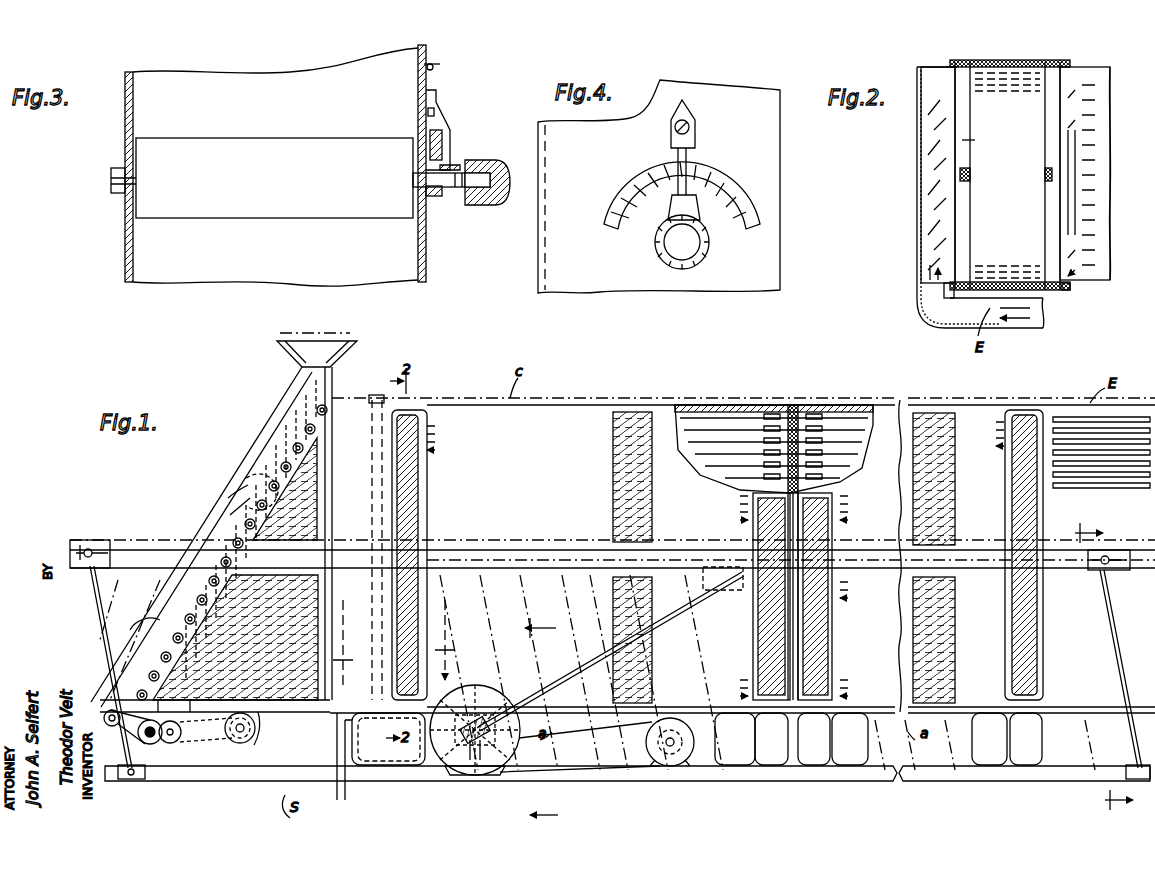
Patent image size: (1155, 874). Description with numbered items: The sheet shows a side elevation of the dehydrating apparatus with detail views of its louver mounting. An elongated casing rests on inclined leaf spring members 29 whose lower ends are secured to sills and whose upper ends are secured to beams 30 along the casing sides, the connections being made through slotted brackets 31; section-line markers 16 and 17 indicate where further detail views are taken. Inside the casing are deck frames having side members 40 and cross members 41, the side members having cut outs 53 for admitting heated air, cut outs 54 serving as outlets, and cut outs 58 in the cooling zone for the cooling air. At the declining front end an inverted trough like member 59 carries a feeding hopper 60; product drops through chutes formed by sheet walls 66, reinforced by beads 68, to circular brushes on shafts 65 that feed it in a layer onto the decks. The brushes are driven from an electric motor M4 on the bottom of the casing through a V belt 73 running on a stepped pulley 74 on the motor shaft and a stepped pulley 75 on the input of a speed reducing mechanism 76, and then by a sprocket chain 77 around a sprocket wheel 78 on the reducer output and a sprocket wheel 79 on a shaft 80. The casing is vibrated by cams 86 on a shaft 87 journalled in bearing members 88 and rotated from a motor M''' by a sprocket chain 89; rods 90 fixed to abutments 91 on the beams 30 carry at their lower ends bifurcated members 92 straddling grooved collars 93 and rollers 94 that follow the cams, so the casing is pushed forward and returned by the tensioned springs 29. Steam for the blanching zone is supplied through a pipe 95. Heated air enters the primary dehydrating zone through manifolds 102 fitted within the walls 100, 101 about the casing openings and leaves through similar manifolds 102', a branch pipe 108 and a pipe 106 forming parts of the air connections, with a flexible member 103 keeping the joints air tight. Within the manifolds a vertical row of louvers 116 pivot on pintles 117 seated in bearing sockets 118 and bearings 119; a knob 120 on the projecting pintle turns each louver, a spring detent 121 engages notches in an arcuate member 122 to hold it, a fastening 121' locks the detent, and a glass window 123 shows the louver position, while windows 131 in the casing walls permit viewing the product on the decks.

In FIG. 1, the air flow arrow 16 is at (399, 648).
In FIG. 1, the direction arrow 17 is at (1115, 666).
In FIG. 1, the leaf spring members 29 is at (128, 582).
In FIG. 2, the beams 30 is at (960, 172).
In FIG. 1, the beams 30 is at (140, 548).
In FIG. 1, the brackets 31 is at (90, 540).
In FIG. 1, the side members 40 is at (715, 440).
In FIG. 1, the cross members 41 is at (795, 405).
In FIG. 1, the cut out portions 53 is at (815, 412).
In FIG. 1, the cut outs 54 is at (772, 412).
In FIG. 1, the cut outs 58 is at (1095, 487).
In FIG. 1, the trough like member 59 is at (228, 498).
In FIG. 1, the feeding hopper 60 is at (350, 333).
In FIG. 1, the shafts 65 is at (316, 428).
In FIG. 1, the sheet material walls 66 is at (292, 400).
In FIG. 1, the reinforcing bead 68 is at (255, 470).
In FIG. 1, the V belt 73 is at (205, 740).
In FIG. 1, the pulley 74 is at (255, 728).
In FIG. 1, the pulley 75 is at (145, 745).
In FIG. 1, the speed reducing mechanism 76 is at (194, 693).
In FIG. 1, the sprocket chain 77 is at (161, 694).
In FIG. 1, the sprocket wheel 78 is at (171, 743).
In FIG. 1, the sprocket wheel 79 is at (100, 600).
In FIG. 1, the shaft 80 is at (108, 730).
In FIG. 1, the cams 86 is at (495, 690).
In FIG. 1, the shaft 87 is at (462, 735).
In FIG. 1, the bearing members 88 is at (455, 775).
In FIG. 1, the sprocket chain 89 is at (640, 728).
In FIG. 1, the rods 90 is at (592, 660).
In FIG. 1, the abutments 91 is at (718, 590).
In FIG. 1, the bifurcated member 92 is at (483, 753).
In FIG. 1, the collars 93 is at (440, 775).
In FIG. 1, the rollers 94 is at (484, 731).
In FIG. 1, the pipe 95 is at (370, 482).
In FIG. 2, the casing opening wall 100 is at (1040, 143).
In FIG. 2, the casing opening wall 101 is at (975, 140).
In FIG. 3, the manifolds 102 is at (280, 178).
In FIG. 4, the manifolds 102 is at (688, 186).
In FIG. 2, the manifolds 102 is at (1007, 197).
In FIG. 1, the manifolds 102 is at (731, 762).
In FIG. 1, the manifolds 102' is at (812, 763).
In FIG. 2, the flexible member 103 is at (955, 290).
In FIG. 2, the pipe 106 is at (1025, 328).
In FIG. 1, the pipe 106 is at (355, 760).
In FIG. 1, the branch pipe 108 is at (735, 765).
In FIG. 3, the louvers 116 is at (322, 148).
In FIG. 2, the louvers 116 is at (932, 72).
In FIG. 1, the louvers 116 is at (437, 435).
In FIG. 3, the pintles 117 is at (220, 172).
In FIG. 3, the bearing sockets 118 is at (113, 190).
In FIG. 3, the bearings 119 is at (438, 197).
In FIG. 3, the knob 120 is at (500, 205).
In FIG. 4, the knob 120 is at (660, 252).
In FIG. 3, the spring detent 121 is at (465, 130).
In FIG. 4, the spring detent 121 is at (708, 183).
In FIG. 3, the securing means 121' is at (462, 67).
In FIG. 4, the securing means 121' is at (715, 124).
In FIG. 3, the arcuate members 122 is at (442, 158).
In FIG. 4, the arcuate members 122 is at (635, 178).
In FIG. 1, the windows 123 is at (412, 472).
In FIG. 1, the windows 131 is at (985, 502).
In FIG. 1, the motor M4 is at (249, 737).
In FIG. 1, the motor M''' is at (670, 766).